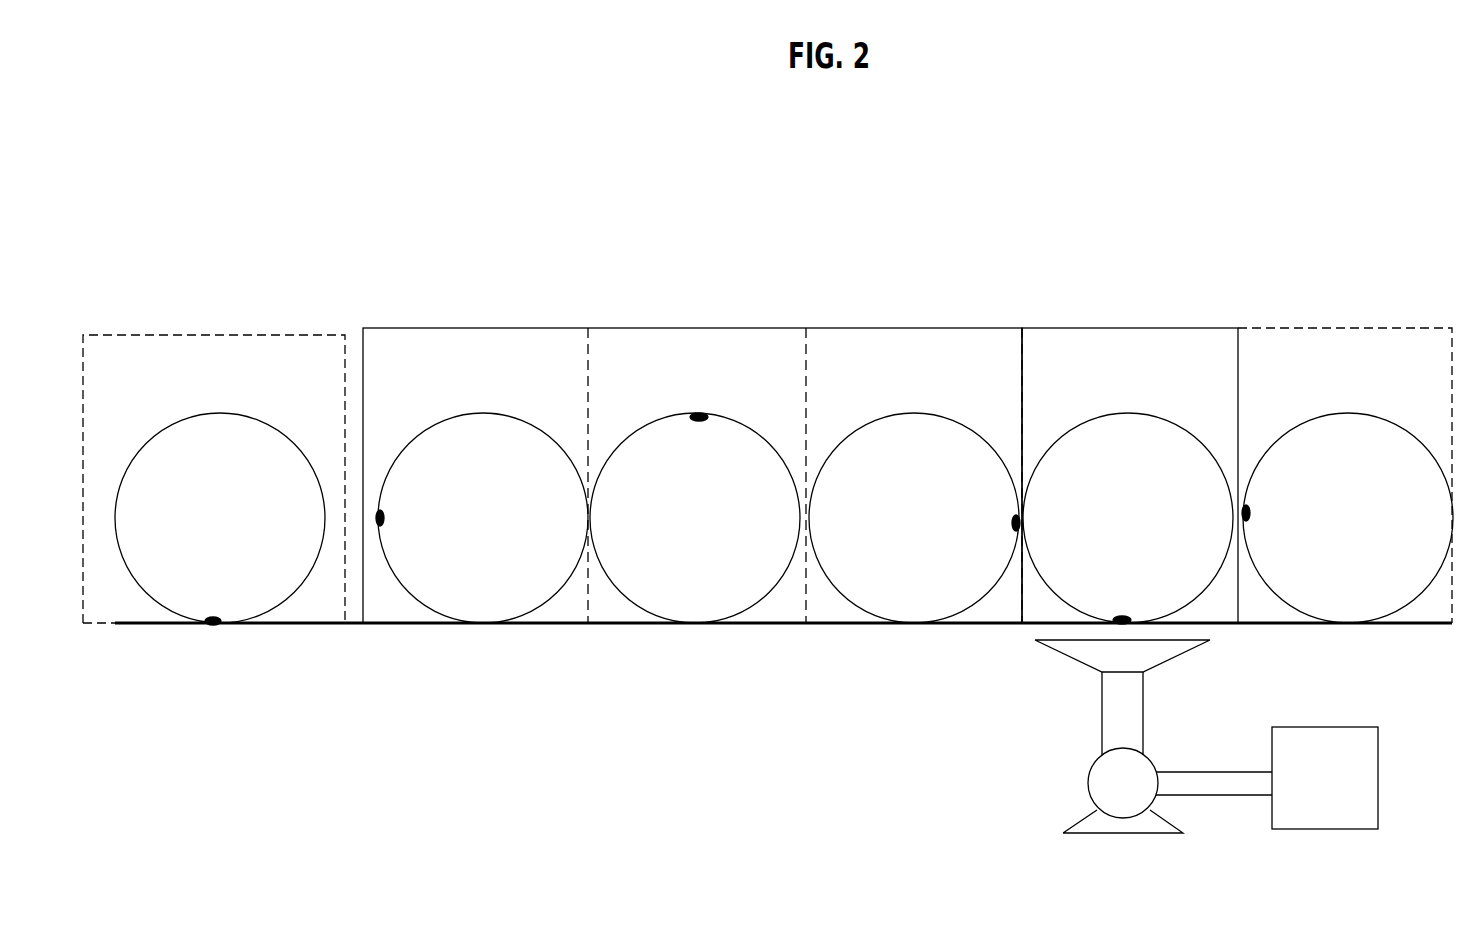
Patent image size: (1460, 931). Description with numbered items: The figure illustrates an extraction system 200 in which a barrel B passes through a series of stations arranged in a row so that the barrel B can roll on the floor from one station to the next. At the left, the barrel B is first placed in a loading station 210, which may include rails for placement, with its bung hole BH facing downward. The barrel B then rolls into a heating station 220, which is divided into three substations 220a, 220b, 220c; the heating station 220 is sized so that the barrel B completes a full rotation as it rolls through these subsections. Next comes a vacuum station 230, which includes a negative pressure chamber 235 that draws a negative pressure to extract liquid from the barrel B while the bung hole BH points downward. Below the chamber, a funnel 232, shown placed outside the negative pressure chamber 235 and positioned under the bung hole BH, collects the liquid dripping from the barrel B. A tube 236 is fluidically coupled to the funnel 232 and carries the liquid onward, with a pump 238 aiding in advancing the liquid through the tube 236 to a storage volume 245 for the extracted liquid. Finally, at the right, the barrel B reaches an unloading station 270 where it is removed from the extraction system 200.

The extraction system 200 is at (316, 198).
The loading station 210 is at (112, 598).
The barrel B is at (228, 482).
The bung hole BH is at (213, 625).
The heating station 220 is at (1018, 230).
The substation 220a is at (482, 382).
The substation 220b is at (677, 380).
The substation 220c is at (905, 380).
The vacuum station 230 is at (1100, 333).
The negative pressure chamber 235 is at (1164, 379).
The funnel 232 is at (1117, 655).
The tube 236 is at (1112, 700).
The pump 238 is at (1117, 783).
The storage volume 245 is at (1323, 740).
The unloading station 270 is at (1292, 368).